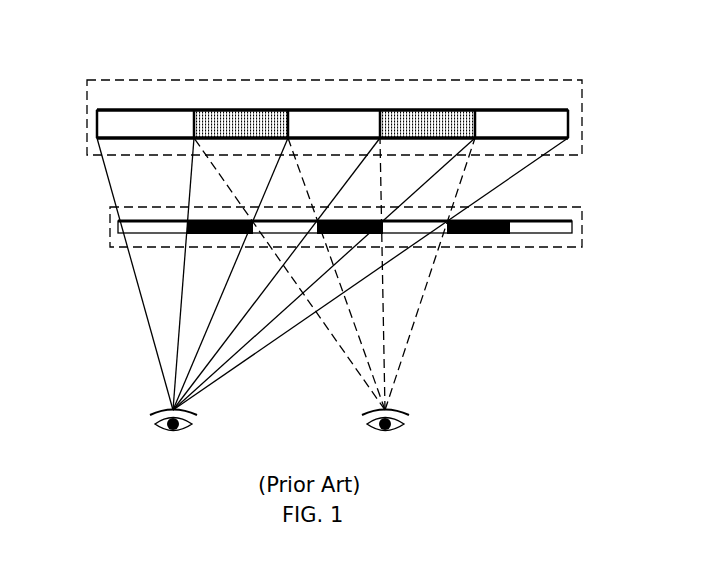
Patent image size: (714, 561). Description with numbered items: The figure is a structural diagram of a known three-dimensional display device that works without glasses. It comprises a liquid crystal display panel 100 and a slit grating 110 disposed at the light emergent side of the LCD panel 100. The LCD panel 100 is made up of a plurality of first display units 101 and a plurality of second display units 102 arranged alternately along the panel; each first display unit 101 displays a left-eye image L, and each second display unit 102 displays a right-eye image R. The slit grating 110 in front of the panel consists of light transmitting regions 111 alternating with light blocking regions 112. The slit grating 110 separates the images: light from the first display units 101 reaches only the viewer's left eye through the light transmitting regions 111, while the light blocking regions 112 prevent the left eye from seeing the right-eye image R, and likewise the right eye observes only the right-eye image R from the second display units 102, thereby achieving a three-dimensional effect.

The liquid crystal display panel 100 is at (334, 85).
The first display unit 101 is at (332, 86).
The second display unit 102 is at (334, 87).
The slit grating 110 is at (307, 250).
The light transmitting region 111 is at (363, 257).
The light blocking region 112 is at (361, 257).